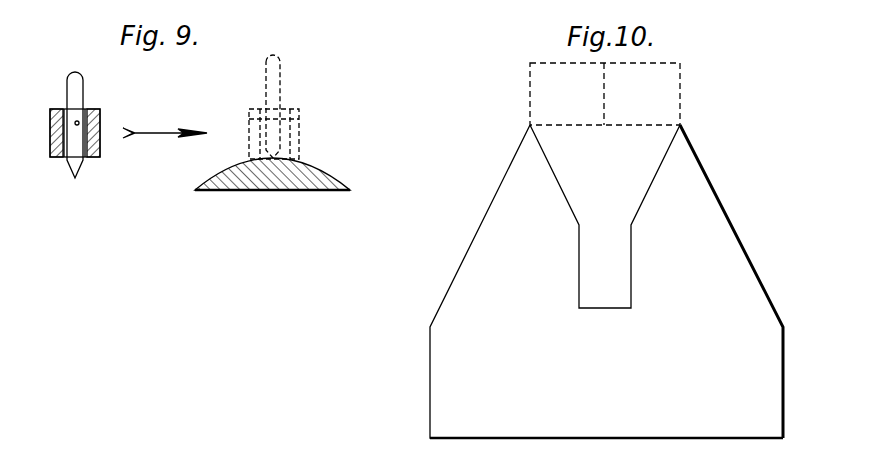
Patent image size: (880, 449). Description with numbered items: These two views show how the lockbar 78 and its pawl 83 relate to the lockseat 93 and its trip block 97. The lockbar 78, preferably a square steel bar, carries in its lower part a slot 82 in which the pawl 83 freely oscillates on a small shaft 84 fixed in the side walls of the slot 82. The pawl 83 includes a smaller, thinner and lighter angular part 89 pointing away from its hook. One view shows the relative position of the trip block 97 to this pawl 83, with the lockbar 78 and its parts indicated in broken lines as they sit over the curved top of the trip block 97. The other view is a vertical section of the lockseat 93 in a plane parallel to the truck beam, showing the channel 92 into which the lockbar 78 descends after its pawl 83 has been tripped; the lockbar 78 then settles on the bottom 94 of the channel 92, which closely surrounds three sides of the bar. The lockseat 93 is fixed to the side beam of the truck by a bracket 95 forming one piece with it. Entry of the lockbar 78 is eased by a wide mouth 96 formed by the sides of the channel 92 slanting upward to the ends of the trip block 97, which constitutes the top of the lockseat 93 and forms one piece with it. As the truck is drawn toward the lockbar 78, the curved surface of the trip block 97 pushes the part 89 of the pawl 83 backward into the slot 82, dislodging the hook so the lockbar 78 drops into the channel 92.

In FIG. 9, the lockbar 78 is at (52, 156).
In FIG. 9, the slot 82 is at (66, 110).
In FIG. 9, the pawl 83 is at (84, 94).
In FIG. 9, the small shaft 84 is at (50, 121).
In FIG. 9, the angular part 89 is at (72, 172).
In FIG. 10, the channel 92 is at (605, 216).
In FIG. 10, the lockseat 93 is at (681, 231).
In FIG. 10, the bottom 94 is at (598, 309).
In FIG. 10, the bracket 95 is at (606, 281).
In FIG. 10, the wide mouth 96 is at (609, 143).
In FIG. 9, the trip block 97 is at (285, 191).
In FIG. 10, the trip block 97 is at (605, 94).